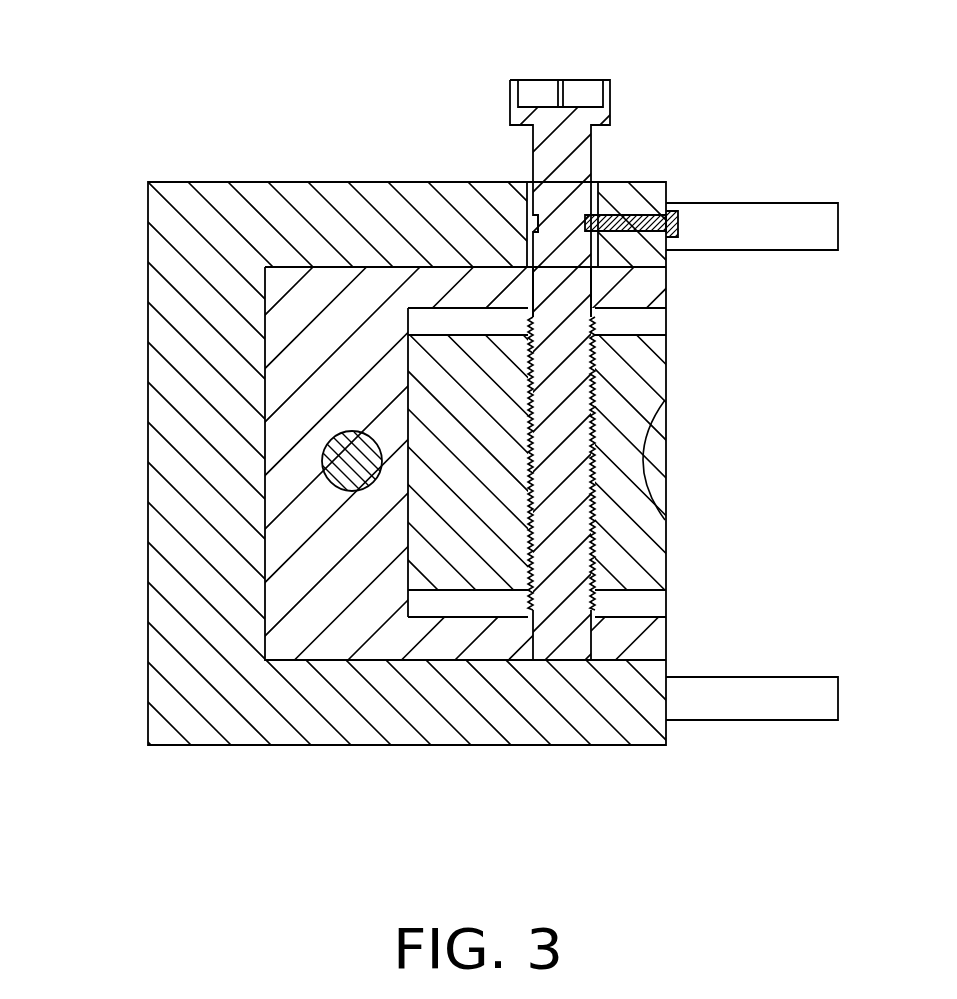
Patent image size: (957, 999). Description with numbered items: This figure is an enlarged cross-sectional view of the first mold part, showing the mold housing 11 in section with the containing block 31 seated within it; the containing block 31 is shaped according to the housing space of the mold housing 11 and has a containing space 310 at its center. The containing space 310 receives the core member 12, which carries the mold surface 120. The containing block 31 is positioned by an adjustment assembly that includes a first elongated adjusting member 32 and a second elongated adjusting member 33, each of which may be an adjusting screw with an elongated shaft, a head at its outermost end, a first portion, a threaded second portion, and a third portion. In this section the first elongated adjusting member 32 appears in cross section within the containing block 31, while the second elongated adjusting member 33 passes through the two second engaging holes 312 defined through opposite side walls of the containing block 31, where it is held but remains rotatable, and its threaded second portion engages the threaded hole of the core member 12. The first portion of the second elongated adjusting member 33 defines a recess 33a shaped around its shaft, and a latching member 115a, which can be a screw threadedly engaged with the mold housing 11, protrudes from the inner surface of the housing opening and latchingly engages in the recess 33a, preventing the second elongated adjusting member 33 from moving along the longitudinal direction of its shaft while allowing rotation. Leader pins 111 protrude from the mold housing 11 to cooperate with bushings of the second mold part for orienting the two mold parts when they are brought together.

The mold housing 11 is at (265, 195).
The leader pins 111 is at (762, 220).
The latching member 115a is at (643, 215).
The core member 12 is at (625, 388).
The mold surface 120 is at (652, 460).
The containing block 31 is at (641, 285).
The containing space 310 is at (648, 603).
The second engaging holes 312 is at (595, 292).
The first elongated adjusting member 32 is at (330, 462).
The second elongated adjusting member 33 is at (582, 155).
The recess 33a is at (530, 220).